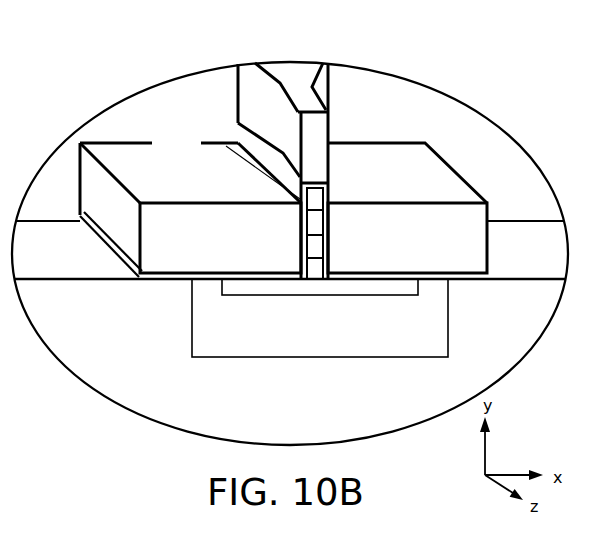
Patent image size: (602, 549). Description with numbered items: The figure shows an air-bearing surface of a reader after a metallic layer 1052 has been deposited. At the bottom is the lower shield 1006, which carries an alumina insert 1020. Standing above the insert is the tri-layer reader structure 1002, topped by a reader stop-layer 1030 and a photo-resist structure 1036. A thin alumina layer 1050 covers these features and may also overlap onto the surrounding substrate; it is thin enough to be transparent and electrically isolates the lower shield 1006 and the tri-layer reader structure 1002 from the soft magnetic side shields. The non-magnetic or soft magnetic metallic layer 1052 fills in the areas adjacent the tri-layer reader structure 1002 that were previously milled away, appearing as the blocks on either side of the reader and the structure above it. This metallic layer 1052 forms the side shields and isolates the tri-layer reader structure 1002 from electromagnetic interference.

The tri-layer reader structure 1002 is at (270, 219).
The lower shield 1006 is at (343, 332).
The alumina insert 1020 is at (340, 295).
The reader stop-layer 1030 is at (145, 143).
The photo-resist structure 1036 is at (226, 146).
The alumina layer 1050 is at (135, 269).
The metallic layer 1052 is at (293, 114).